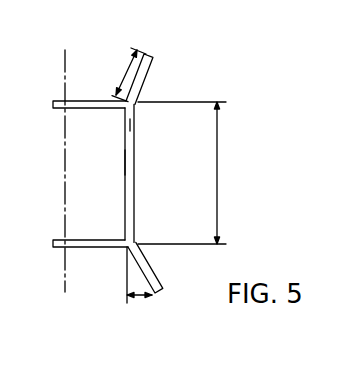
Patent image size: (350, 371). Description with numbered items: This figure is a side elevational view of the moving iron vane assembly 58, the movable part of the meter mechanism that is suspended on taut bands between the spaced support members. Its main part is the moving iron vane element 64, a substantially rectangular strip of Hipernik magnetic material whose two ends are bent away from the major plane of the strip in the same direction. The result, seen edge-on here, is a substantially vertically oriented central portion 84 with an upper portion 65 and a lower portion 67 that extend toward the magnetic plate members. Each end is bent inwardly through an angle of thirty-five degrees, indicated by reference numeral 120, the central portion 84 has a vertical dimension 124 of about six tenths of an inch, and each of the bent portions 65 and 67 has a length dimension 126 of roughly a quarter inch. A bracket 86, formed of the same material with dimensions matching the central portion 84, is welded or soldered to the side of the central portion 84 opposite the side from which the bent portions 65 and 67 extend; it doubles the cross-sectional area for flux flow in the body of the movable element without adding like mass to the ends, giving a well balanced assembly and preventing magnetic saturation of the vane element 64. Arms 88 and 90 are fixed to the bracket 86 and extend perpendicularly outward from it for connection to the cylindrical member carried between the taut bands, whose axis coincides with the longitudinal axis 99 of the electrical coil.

The moving iron vane assembly 58 is at (108, 204).
The moving iron vane element 64 is at (173, 198).
The upper portion 65 is at (150, 67).
The lower portion 67 is at (151, 272).
The central portion 84 is at (131, 162).
The bracket 86 is at (131, 125).
The arm 88 is at (83, 109).
The arm 90 is at (77, 241).
The longitudinal axis 99 is at (65, 51).
The bend angle 120 is at (143, 296).
The vertical dimension of central portion 124 is at (217, 165).
The length dimension of bent portions 126 is at (123, 79).